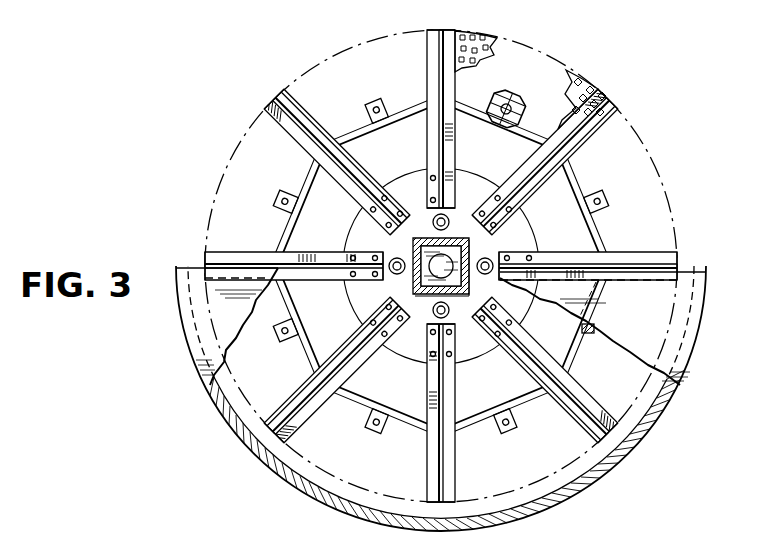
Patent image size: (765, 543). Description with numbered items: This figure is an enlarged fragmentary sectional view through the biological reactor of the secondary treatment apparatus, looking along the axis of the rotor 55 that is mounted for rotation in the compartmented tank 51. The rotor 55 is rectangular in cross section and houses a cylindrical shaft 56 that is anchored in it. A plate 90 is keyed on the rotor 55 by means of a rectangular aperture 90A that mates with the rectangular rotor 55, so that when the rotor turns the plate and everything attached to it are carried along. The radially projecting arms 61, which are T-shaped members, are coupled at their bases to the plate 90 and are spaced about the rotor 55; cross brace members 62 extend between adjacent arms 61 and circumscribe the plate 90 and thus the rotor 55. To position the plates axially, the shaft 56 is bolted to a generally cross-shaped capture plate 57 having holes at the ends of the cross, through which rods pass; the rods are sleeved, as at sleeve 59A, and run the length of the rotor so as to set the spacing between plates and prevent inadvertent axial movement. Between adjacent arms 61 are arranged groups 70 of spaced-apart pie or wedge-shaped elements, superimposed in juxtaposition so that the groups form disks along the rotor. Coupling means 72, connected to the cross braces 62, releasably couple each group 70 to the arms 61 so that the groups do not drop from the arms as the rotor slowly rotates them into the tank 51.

The compartmented tank 51 is at (203, 348).
The rotor 55 is at (472, 262).
The cylindrical shaft 56 is at (440, 268).
The capture plate 57 is at (423, 260).
The sleeve 59A is at (378, 298).
The radially projecting arm 61 is at (619, 120).
The cross brace member 62 is at (524, 133).
The group of wedge shaped elements 70 is at (337, 44).
The coupling means 72 is at (376, 100).
The plate 90 is at (408, 177).
The rectangular aperture 90A is at (500, 282).